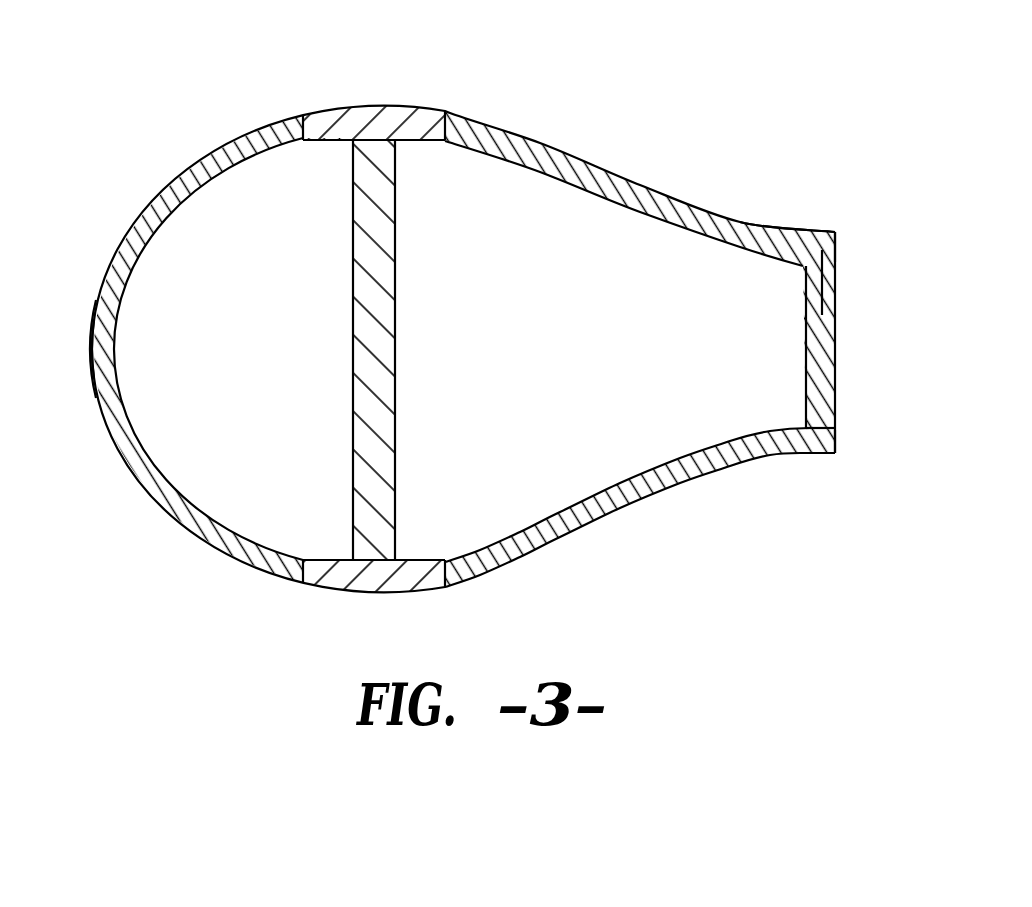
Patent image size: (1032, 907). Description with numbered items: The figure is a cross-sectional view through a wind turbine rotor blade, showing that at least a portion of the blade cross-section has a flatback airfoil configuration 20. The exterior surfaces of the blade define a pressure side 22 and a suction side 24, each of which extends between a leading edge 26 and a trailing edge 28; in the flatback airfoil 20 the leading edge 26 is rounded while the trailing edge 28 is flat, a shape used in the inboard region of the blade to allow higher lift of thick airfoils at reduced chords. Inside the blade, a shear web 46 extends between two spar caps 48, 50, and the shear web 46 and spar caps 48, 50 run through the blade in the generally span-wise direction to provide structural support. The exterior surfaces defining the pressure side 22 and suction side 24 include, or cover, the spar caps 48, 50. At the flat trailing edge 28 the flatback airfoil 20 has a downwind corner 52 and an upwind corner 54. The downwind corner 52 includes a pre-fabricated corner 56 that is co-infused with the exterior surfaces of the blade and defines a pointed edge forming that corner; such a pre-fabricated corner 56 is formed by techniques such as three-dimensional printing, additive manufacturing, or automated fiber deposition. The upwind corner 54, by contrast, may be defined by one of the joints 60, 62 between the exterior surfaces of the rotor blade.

The flatback airfoil configuration 20 is at (656, 98).
The pressure side 22 is at (208, 155).
The suction side 24 is at (210, 543).
The leading edge 26 is at (90, 352).
The trailing edge 28 is at (840, 353).
The shear web 46 is at (351, 338).
The spar cap 48 is at (410, 147).
The spar cap 50 is at (413, 558).
The downwind corner 52 is at (839, 230).
The upwind corner 54 is at (839, 460).
The pre-fabricated corner 56 is at (779, 226).
The joint 60 is at (73, 369).
The joint 62 is at (842, 428).